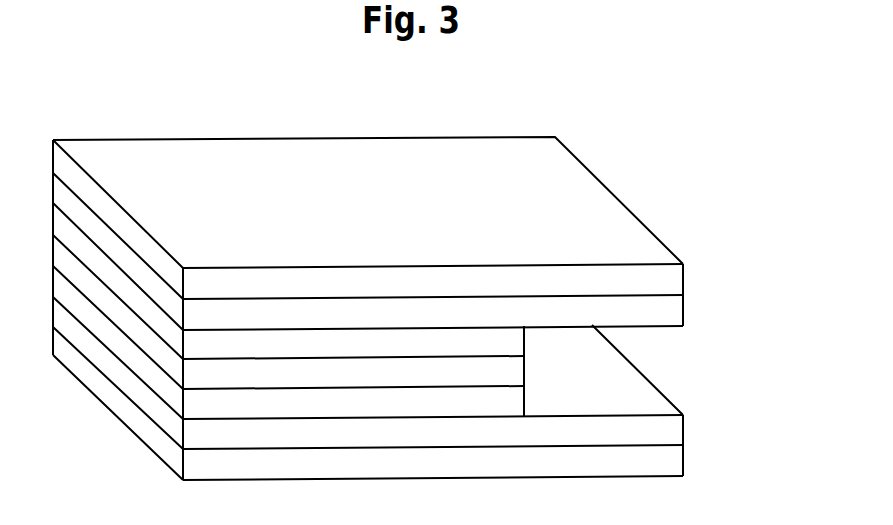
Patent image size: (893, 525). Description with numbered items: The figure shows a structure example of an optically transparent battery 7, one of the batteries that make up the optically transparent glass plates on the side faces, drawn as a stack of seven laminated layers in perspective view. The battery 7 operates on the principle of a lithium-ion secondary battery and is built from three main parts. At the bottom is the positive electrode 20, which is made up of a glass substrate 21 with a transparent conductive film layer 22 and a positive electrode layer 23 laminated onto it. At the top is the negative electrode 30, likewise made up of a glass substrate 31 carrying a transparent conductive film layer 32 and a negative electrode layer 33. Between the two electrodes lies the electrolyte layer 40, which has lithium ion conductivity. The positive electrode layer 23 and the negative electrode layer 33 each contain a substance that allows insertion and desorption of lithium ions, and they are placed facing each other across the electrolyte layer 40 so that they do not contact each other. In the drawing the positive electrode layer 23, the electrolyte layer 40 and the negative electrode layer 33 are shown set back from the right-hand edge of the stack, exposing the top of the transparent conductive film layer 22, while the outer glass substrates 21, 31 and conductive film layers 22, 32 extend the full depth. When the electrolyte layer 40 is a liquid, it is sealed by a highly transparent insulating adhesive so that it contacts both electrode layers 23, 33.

The optically transparent battery 7 is at (691, 144).
The positive electrode 20 is at (727, 385).
The glass substrate 21 is at (670, 461).
The transparent conductive film layer 22 is at (670, 431).
The positive electrode layer 23 is at (514, 399).
The negative electrode 30 is at (725, 265).
The glass substrate 31 is at (670, 284).
The transparent conductive film layer 32 is at (670, 313).
The negative electrode layer 33 is at (514, 339).
The electrolyte layer 40 is at (514, 371).